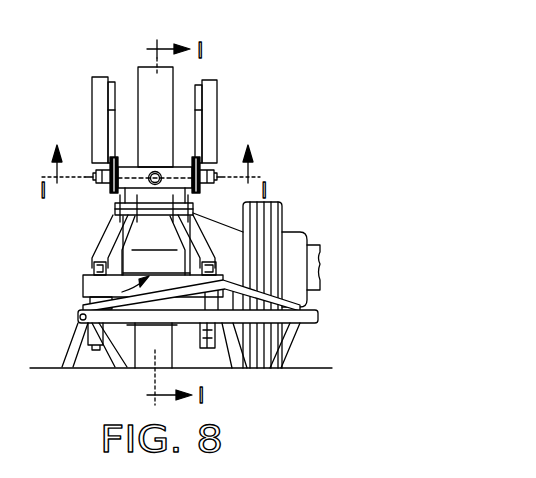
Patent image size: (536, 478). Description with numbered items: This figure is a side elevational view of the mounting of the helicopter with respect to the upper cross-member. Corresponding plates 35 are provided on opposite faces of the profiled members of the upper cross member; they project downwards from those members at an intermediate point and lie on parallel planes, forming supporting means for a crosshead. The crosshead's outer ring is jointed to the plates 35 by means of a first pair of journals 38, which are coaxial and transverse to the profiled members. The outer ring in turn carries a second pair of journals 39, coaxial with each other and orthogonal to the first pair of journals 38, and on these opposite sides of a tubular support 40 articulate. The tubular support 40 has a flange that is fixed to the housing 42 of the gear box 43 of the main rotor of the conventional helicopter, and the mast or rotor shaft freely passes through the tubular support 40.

The plates 35 is at (108, 115).
The first pair of journals 38 is at (200, 195).
The second pair of journals 39 is at (161, 173).
The tubular support 40 is at (115, 207).
The housing 42 is at (167, 241).
The gear box 43 is at (92, 297).